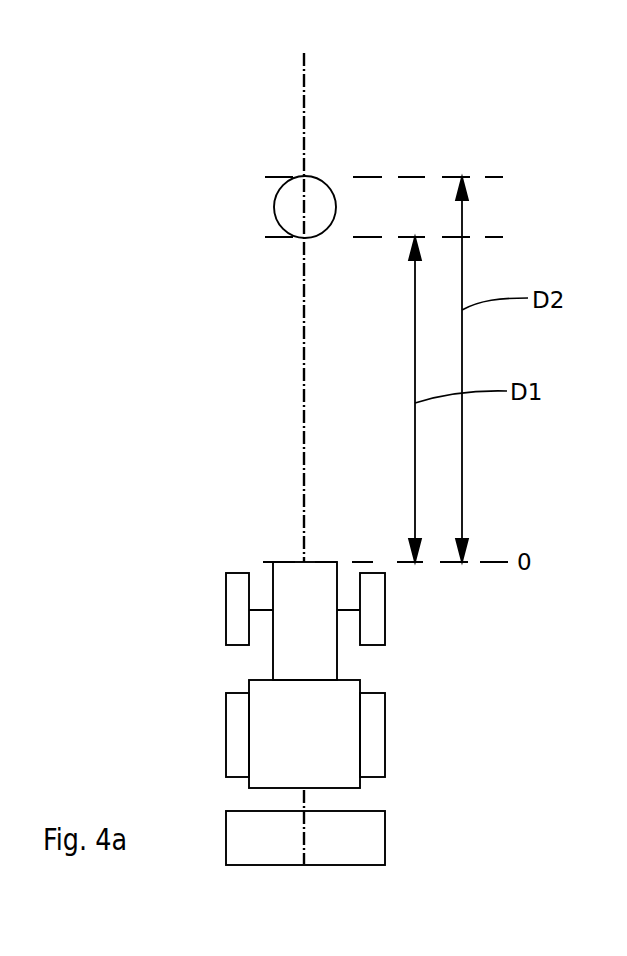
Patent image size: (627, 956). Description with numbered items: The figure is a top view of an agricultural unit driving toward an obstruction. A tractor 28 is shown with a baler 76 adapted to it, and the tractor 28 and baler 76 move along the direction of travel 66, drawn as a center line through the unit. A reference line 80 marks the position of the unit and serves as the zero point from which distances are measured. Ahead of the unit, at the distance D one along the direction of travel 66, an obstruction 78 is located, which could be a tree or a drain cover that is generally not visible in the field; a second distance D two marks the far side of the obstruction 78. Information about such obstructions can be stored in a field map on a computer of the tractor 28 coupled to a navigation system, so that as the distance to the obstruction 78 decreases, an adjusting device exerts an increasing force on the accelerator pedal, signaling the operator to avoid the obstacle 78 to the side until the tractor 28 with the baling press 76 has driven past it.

The direction of travel 66 is at (304, 100).
The obstruction 78 is at (320, 195).
The reference line 80 is at (480, 560).
The tractor 28 is at (210, 660).
The baler 76 is at (269, 852).